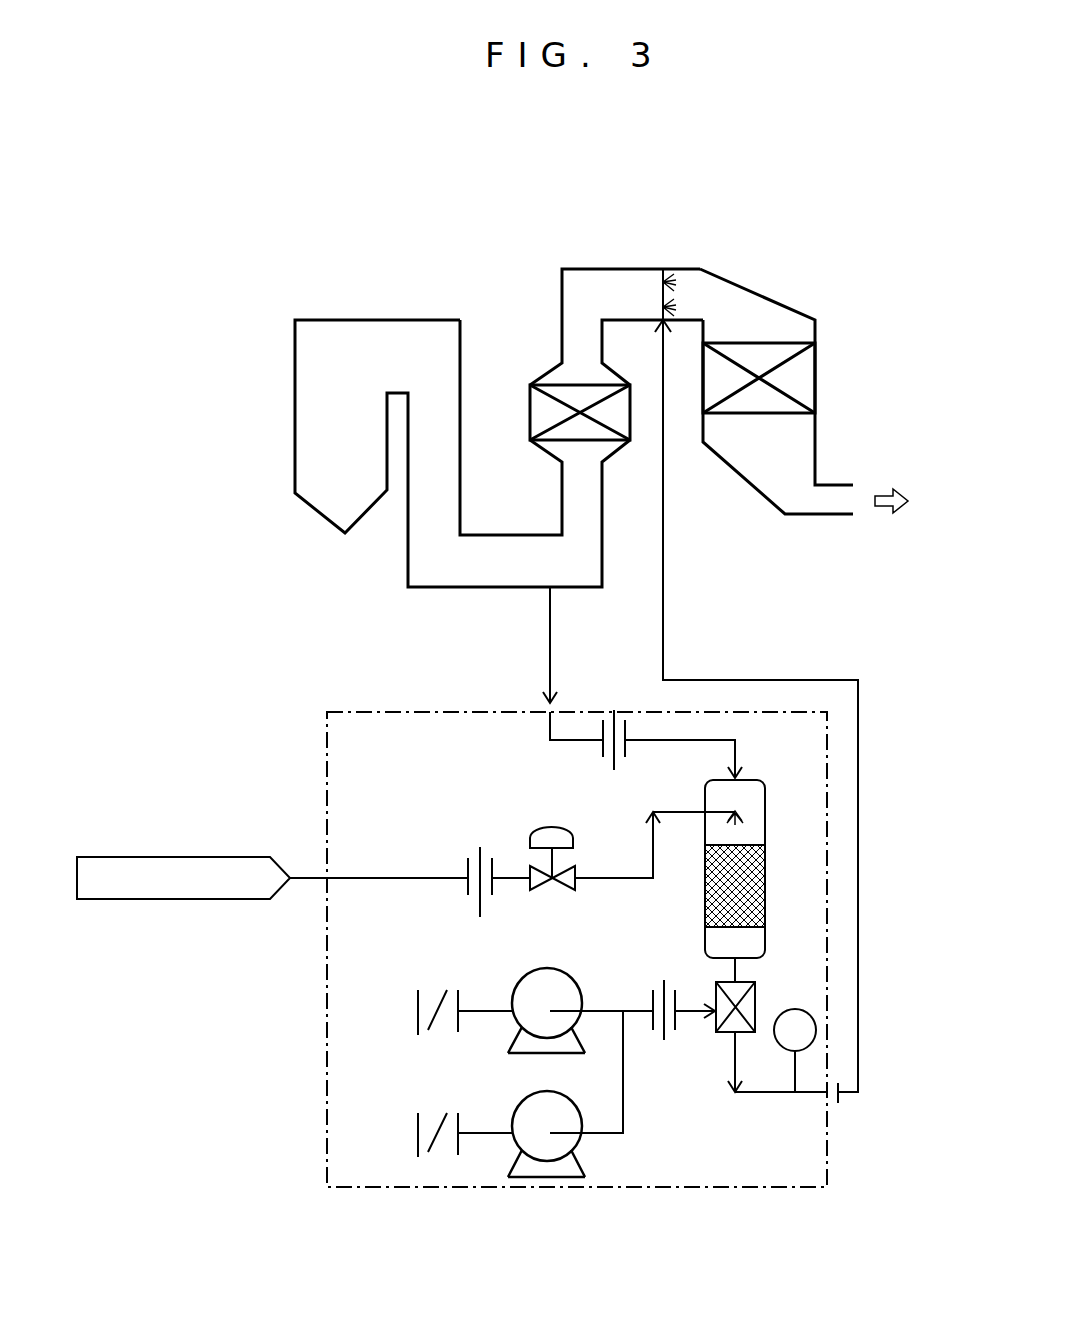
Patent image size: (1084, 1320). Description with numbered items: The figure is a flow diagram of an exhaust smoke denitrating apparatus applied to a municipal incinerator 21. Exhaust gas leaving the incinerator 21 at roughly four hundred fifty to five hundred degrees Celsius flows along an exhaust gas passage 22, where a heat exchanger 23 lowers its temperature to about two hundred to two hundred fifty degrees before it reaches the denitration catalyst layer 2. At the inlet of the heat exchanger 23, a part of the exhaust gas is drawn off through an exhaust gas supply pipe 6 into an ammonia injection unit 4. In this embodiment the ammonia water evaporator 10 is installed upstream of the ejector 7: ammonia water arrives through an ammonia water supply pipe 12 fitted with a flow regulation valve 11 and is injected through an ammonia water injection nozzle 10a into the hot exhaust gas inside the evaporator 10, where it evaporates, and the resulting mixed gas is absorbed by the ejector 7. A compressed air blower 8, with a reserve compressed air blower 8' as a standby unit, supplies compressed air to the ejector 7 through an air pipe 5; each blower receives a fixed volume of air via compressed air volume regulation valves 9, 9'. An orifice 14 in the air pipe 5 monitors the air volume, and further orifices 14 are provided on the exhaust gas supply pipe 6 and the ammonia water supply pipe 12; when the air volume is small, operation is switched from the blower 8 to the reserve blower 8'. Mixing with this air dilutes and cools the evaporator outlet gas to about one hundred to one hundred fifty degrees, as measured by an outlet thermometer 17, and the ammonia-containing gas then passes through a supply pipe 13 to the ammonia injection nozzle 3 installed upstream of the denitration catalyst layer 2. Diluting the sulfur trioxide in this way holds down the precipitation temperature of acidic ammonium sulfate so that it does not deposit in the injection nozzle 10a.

The denitration catalyst layer 2 is at (787, 343).
The ammonia injection nozzle 3 is at (662, 280).
The ammonia injection unit 4 is at (327, 996).
The air pipe 5 is at (605, 1011).
The exhaust gas supply pipe 6 is at (555, 632).
The ejector 7 is at (757, 1008).
The compressed air blower 8 is at (546, 984).
The reserve compressed air blower 8' is at (565, 1094).
The compressed air volume regulation valve 9 is at (465, 988).
The compressed air volume regulation valve 9' is at (465, 1112).
The ammonia water evaporator 10 is at (766, 902).
The ammonia water injection nozzle 10a is at (745, 817).
The flow regulation valve 11 is at (552, 827).
The ammonia water supply pipe 12 is at (392, 878).
The supply pipe 13 is at (768, 680).
The orifice 14 is at (612, 772).
The outlet thermometer 17 is at (817, 1030).
The municipal incinerator 21 is at (376, 320).
The exhaust gas passage 22 is at (515, 535).
The heat exchanger 23 is at (535, 410).